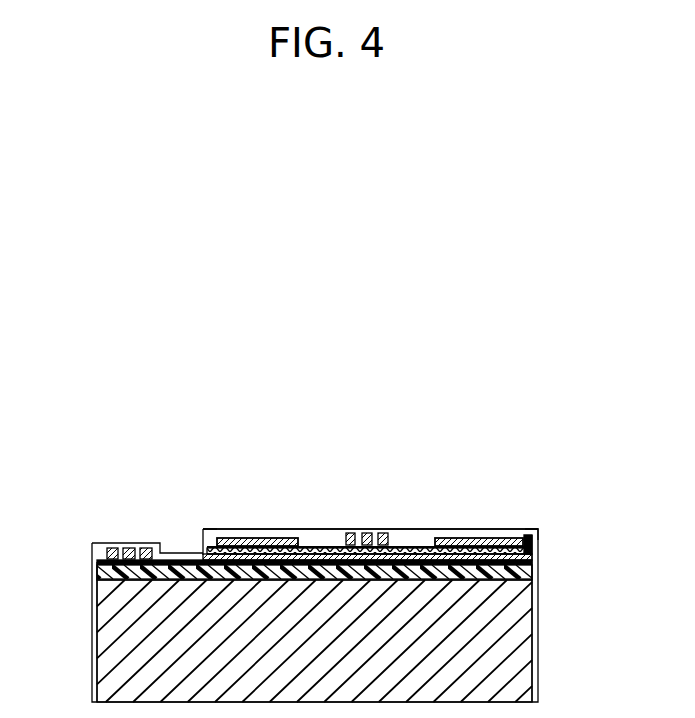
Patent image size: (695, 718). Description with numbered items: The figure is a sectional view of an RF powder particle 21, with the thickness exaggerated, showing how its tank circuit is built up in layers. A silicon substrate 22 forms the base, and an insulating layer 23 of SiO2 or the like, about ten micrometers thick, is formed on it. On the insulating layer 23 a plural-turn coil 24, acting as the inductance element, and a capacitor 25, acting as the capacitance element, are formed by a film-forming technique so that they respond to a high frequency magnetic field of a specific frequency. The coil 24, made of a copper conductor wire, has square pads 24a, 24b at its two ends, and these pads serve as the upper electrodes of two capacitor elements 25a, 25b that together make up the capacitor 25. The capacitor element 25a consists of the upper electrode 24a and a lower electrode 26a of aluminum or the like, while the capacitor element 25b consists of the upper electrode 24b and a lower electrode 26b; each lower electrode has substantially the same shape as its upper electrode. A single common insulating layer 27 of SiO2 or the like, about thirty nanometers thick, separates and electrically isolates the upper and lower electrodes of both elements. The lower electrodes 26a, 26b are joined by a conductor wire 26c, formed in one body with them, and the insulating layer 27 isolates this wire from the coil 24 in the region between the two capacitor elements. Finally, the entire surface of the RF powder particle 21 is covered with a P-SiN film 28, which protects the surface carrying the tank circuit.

The RF powder particle 21 is at (539, 618).
The silicon substrate 22 is at (523, 657).
The insulating layer 23 is at (526, 570).
The coil 24 is at (117, 542).
The pad 24a is at (257, 538).
The pad 24b is at (478, 538).
The capacitor 25 is at (297, 527).
The capacitor element 25a is at (220, 537).
The capacitor element 25b is at (530, 530).
The lower electrode 26a is at (202, 547).
The lower electrode 26b is at (531, 550).
The conductor wire 26c is at (337, 546).
The insulating layer 27 is at (425, 549).
The P-SiN film 28 is at (92, 570).